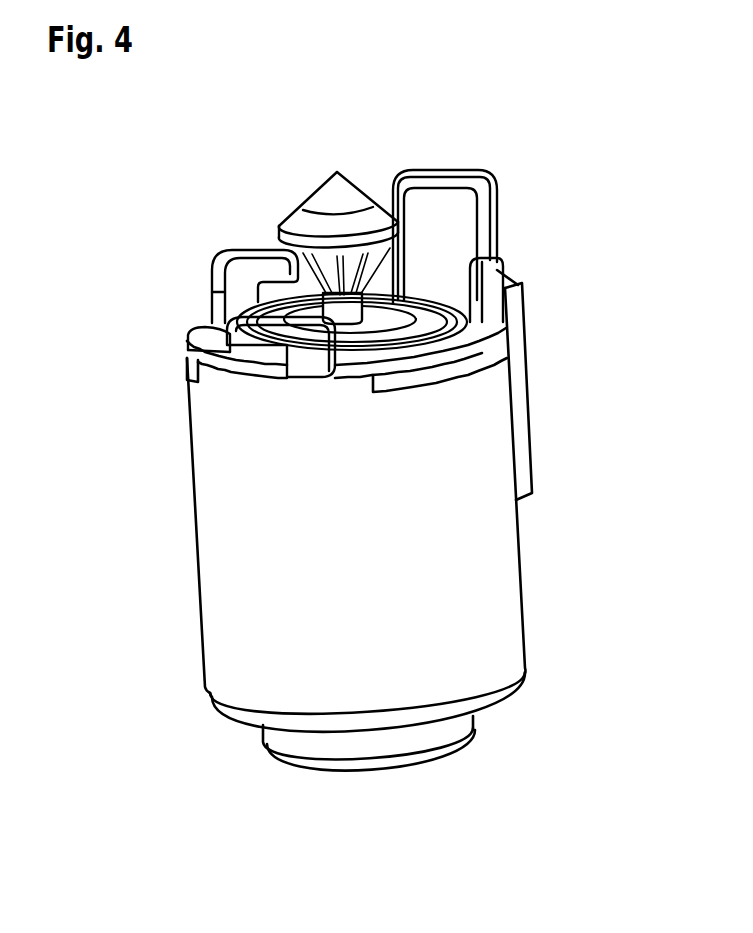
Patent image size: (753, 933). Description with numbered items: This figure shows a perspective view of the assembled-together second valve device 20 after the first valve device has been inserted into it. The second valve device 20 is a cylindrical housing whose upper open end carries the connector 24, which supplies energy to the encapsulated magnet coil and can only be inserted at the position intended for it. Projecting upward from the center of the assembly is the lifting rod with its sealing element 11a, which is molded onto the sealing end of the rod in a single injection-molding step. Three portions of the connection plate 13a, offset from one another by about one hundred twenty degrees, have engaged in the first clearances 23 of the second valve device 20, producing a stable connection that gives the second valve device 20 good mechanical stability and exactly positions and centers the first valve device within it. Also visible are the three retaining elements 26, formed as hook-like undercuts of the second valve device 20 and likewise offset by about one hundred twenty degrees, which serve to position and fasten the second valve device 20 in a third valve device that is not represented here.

The second valve device 20 is at (582, 582).
The first clearances 23 is at (200, 358).
The connector 24 is at (448, 237).
The retaining elements 26 is at (247, 273).
The connection plate 13a is at (197, 348).
The sealing element 11a is at (347, 192).